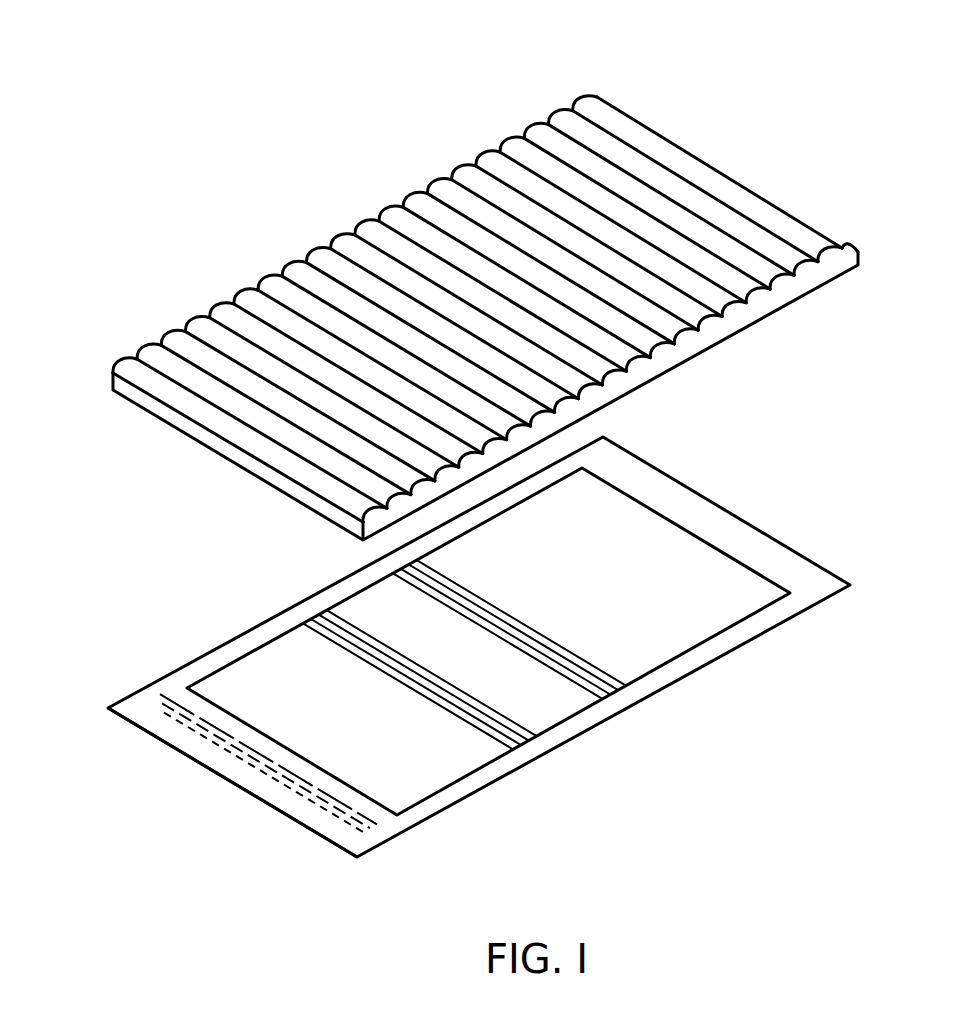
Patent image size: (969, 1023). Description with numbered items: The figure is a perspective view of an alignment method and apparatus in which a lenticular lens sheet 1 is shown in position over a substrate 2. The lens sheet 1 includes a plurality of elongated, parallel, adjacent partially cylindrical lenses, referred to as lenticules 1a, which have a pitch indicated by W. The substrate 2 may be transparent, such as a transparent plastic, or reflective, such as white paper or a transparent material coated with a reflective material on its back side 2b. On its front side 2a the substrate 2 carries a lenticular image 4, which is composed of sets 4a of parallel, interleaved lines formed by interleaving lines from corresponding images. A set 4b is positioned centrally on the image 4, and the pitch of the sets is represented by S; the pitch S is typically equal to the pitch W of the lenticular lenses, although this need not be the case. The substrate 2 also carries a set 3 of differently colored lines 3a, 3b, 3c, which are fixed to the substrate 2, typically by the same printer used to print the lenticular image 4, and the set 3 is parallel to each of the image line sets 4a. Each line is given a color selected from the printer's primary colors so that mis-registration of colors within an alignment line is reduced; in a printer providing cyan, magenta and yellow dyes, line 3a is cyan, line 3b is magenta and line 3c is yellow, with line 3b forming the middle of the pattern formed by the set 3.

The lenticular lens sheet 1 is at (140, 337).
The lenticules 1a is at (528, 52).
The substrate 2 is at (737, 652).
The front side 2a is at (695, 496).
The back side 2b is at (243, 790).
The set of differently colored lines 3 is at (286, 807).
The line 3a is at (365, 837).
The line 3b is at (373, 830).
The line 3c is at (377, 820).
The lenticular image 4 is at (519, 656).
The sets of parallel, interleaved lines 4a is at (527, 653).
The set 4b is at (523, 605).
The pitch W is at (261, 280).
The pitch S is at (605, 692).